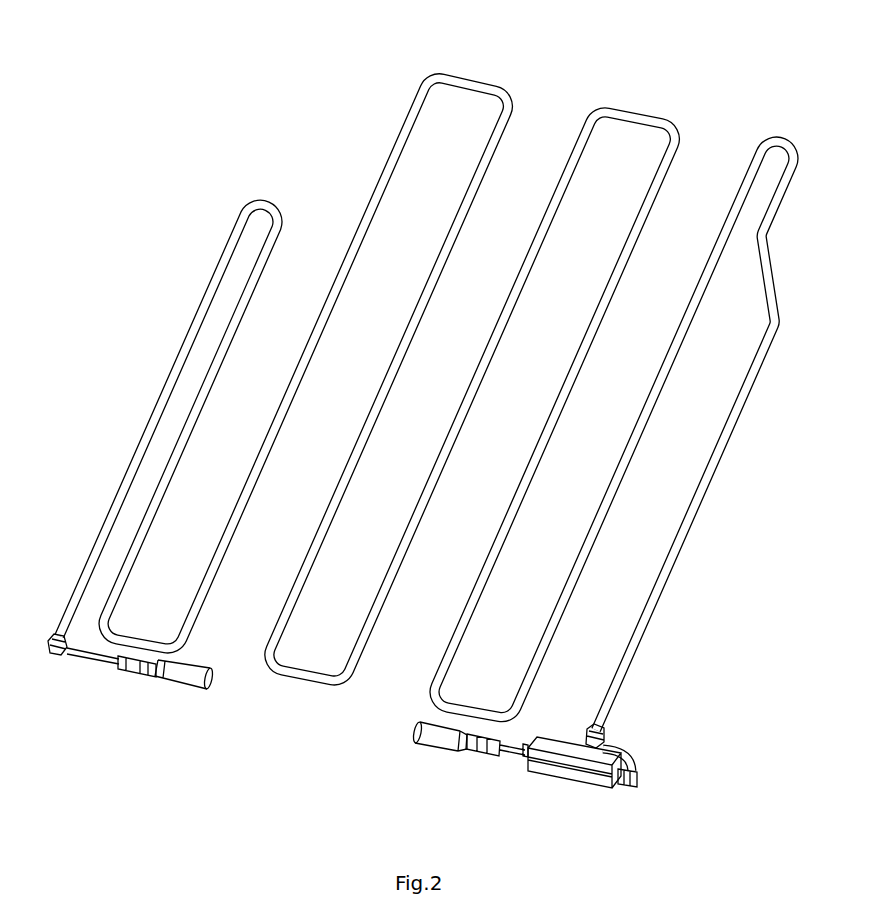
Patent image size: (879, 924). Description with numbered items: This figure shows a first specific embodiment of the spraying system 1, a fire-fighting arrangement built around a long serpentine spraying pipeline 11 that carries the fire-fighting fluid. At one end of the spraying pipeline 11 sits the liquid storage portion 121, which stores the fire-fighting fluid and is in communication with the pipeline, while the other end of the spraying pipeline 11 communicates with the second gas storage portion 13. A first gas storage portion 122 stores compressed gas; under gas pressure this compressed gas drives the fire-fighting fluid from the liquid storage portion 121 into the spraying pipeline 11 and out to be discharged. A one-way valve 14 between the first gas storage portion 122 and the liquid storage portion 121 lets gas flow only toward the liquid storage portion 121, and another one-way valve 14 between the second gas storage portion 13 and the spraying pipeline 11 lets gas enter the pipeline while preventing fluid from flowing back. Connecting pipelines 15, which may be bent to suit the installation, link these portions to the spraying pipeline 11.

The spraying system 1 is at (351, 63).
The spraying pipeline 11 is at (637, 111).
The second gas storage portion 13 is at (177, 681).
The one-way valve 14 is at (147, 674).
The connecting pipeline 15 is at (87, 656).
The liquid storage portion 121 is at (580, 779).
The first gas storage portion 122 is at (435, 743).